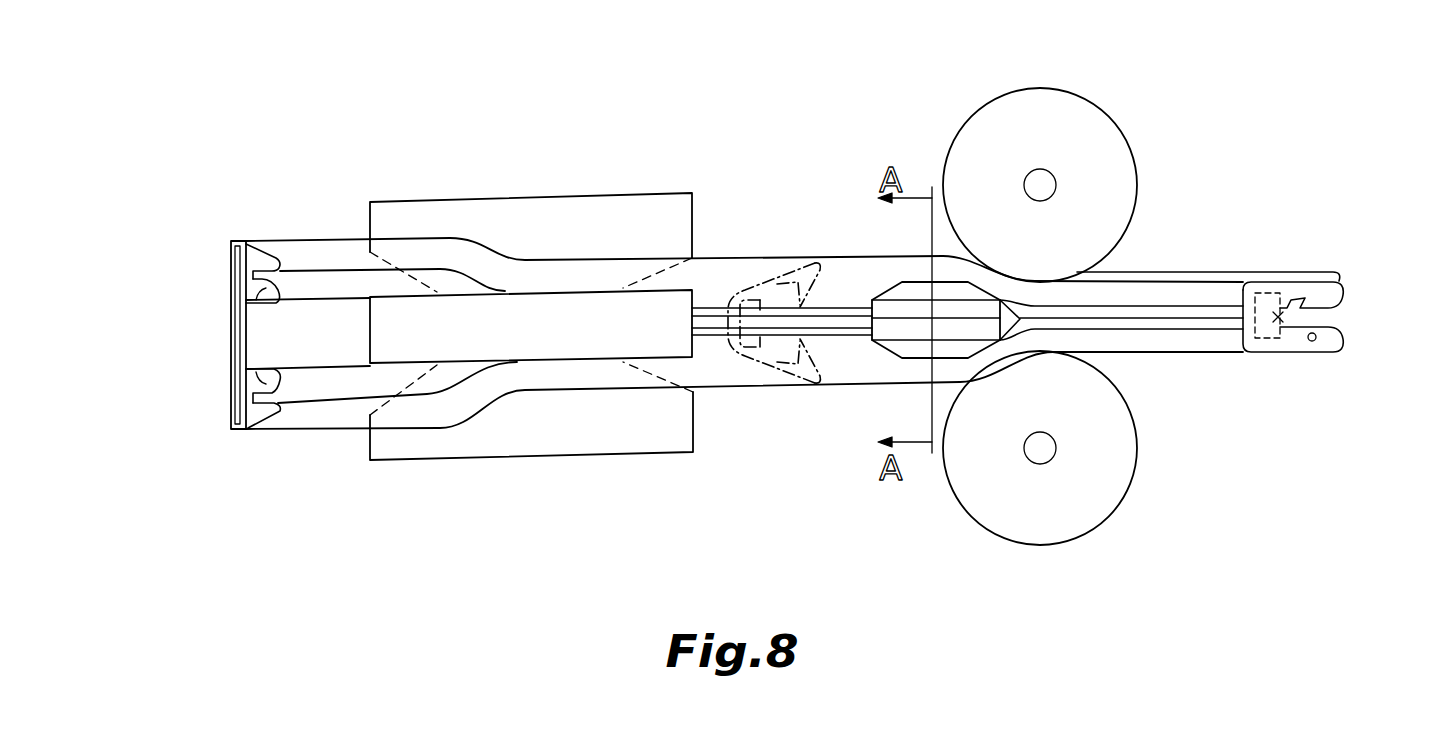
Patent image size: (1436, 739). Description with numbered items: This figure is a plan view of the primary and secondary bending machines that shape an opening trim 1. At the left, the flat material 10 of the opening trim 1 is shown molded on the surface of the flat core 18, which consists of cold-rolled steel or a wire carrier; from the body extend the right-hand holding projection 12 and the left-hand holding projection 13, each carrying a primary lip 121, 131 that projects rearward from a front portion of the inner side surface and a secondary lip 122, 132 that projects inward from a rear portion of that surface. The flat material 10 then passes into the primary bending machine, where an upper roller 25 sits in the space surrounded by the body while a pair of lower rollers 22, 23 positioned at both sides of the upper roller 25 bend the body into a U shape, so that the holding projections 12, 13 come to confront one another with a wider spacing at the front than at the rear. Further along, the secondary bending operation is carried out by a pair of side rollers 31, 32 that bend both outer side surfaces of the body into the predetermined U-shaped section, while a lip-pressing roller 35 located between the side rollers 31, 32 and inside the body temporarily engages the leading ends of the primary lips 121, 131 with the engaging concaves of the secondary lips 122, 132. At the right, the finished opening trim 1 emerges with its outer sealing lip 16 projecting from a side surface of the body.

The opening trim 1 is at (1213, 238).
The flat material 10 is at (286, 220).
The right-hand holding projection 12 is at (1325, 338).
The left-hand holding projection 13 is at (1312, 293).
The outer sealing lip 16 is at (1330, 273).
The flat core 18 is at (238, 346).
The lower roller 22 is at (552, 440).
The lower roller 23 is at (647, 210).
The upper roller 25 is at (550, 327).
The side roller 31 is at (1068, 517).
The side roller 32 is at (1062, 125).
The lip-pressing roller 35 is at (903, 332).
The primary lip 121 is at (265, 410).
The secondary lip 122 is at (263, 377).
The primary lip 131 is at (265, 262).
The secondary lip 132 is at (277, 296).